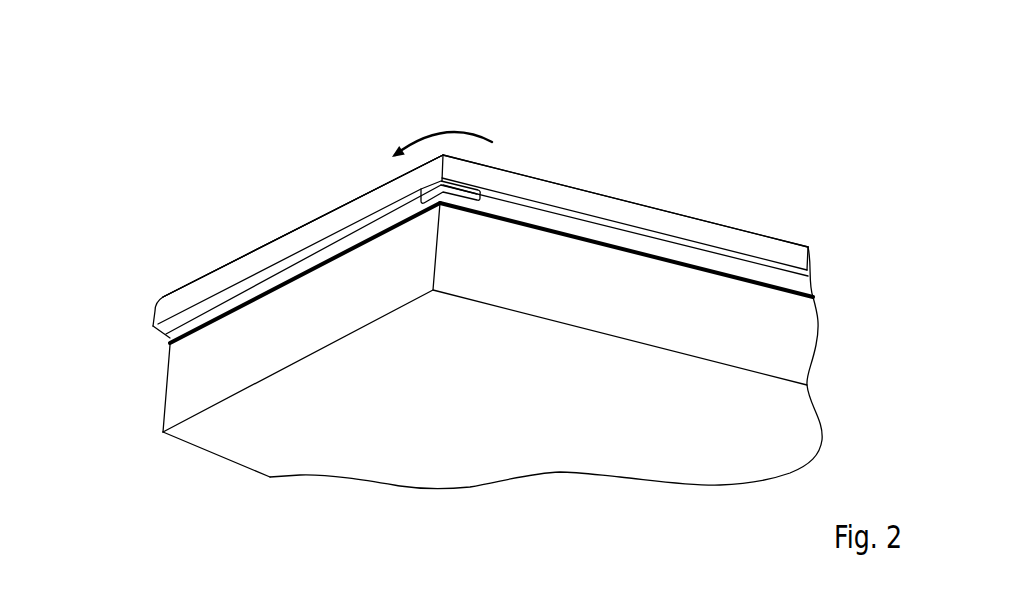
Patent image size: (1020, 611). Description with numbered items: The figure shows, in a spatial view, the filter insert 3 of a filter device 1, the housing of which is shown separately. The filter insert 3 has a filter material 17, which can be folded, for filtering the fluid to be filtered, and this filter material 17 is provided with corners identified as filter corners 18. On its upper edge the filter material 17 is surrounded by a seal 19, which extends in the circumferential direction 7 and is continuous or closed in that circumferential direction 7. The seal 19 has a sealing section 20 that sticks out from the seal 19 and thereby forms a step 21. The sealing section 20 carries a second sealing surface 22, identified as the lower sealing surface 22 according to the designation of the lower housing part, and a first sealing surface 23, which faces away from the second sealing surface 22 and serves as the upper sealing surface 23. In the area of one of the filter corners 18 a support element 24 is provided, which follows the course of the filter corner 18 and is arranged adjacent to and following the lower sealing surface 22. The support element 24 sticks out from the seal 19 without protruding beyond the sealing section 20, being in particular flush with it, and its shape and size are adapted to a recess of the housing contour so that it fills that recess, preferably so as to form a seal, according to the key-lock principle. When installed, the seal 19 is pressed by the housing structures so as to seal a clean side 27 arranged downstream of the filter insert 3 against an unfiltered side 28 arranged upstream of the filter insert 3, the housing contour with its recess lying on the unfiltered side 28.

The filter device 1 is at (748, 167).
The filter insert 3 is at (572, 150).
The circumferential direction 7 is at (445, 128).
The filter material 17 is at (637, 353).
The filter corner 18 is at (442, 245).
The seal 19 is at (793, 238).
The sealing section 20 is at (637, 241).
The step 21 is at (690, 248).
The second sealing surface 22 is at (168, 338).
The first sealing surface 23 is at (181, 291).
The support element 24 is at (423, 198).
The clean side 27 is at (291, 172).
The unfiltered side 28 is at (283, 531).